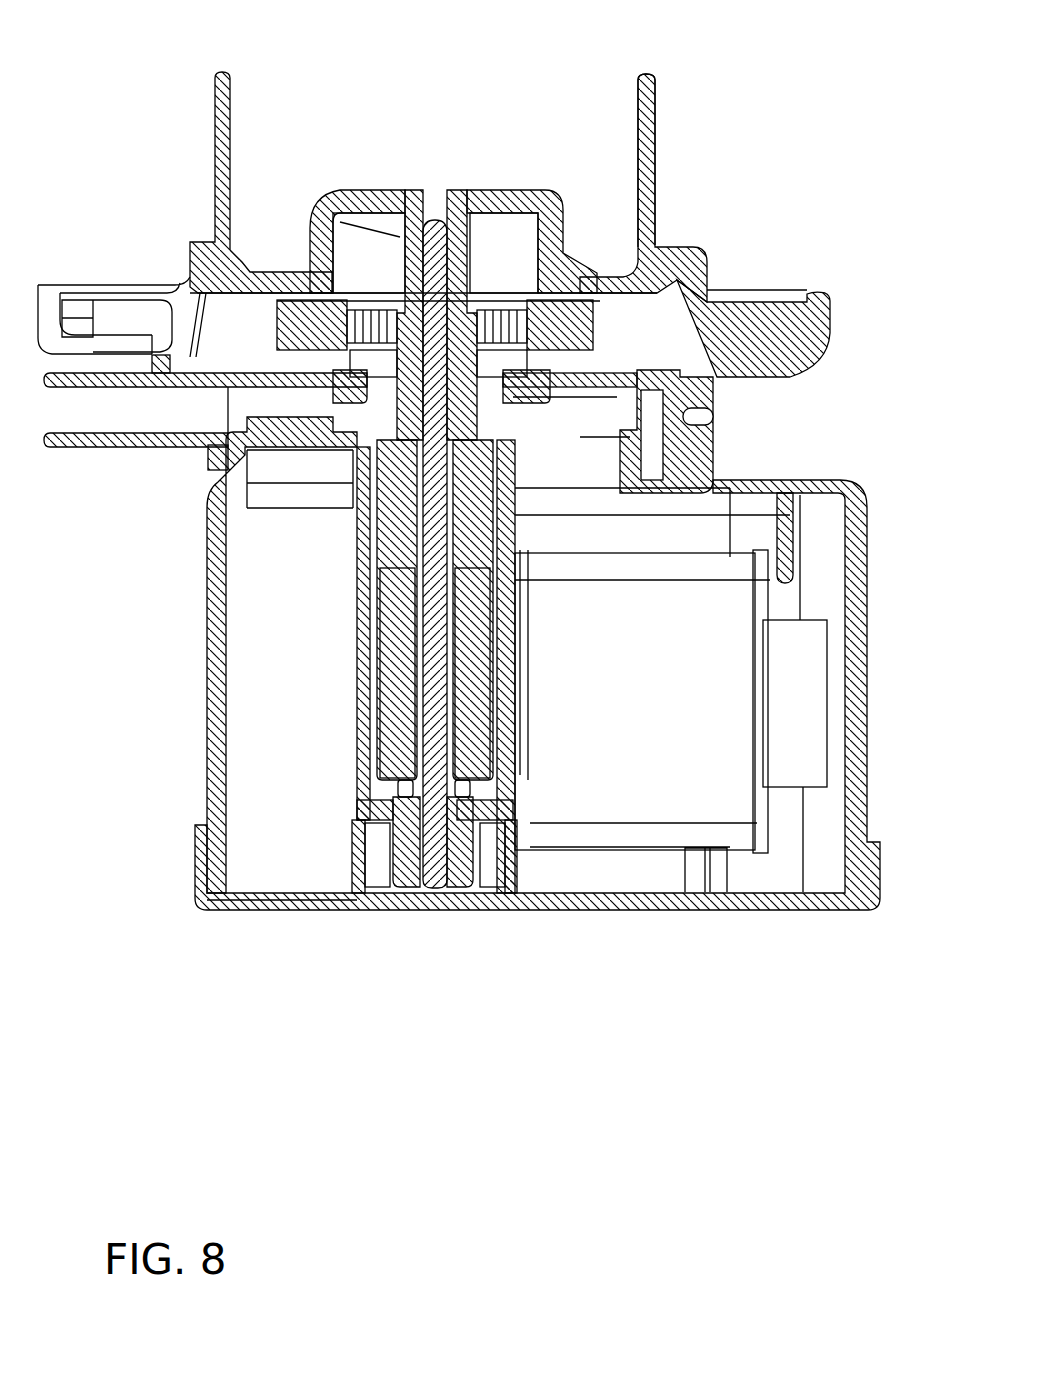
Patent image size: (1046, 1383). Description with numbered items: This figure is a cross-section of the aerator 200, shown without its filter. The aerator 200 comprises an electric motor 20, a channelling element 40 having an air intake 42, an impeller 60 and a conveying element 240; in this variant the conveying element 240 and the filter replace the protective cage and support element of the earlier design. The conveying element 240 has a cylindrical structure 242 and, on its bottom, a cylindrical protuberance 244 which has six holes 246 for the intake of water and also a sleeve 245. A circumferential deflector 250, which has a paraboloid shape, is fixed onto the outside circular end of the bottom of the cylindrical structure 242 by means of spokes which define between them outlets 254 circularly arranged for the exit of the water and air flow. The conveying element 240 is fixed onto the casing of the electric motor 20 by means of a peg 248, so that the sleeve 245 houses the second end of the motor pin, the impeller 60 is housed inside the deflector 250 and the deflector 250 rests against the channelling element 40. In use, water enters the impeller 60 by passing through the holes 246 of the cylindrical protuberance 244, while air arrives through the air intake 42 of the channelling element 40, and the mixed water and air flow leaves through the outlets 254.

The aerator 200 is at (742, 82).
The electric motor 20 is at (205, 780).
The channelling element 40 is at (137, 455).
The air intake 42 is at (52, 417).
The impeller 60 is at (278, 348).
The conveying element 240 is at (710, 258).
The cylindrical structure 242 is at (655, 160).
The cylindrical protuberance 244 is at (340, 190).
The sleeve 245 is at (357, 188).
The holes 246 is at (385, 190).
The peg 248 is at (715, 417).
The circumferential deflector 250 is at (52, 282).
The outlets 254 is at (195, 303).